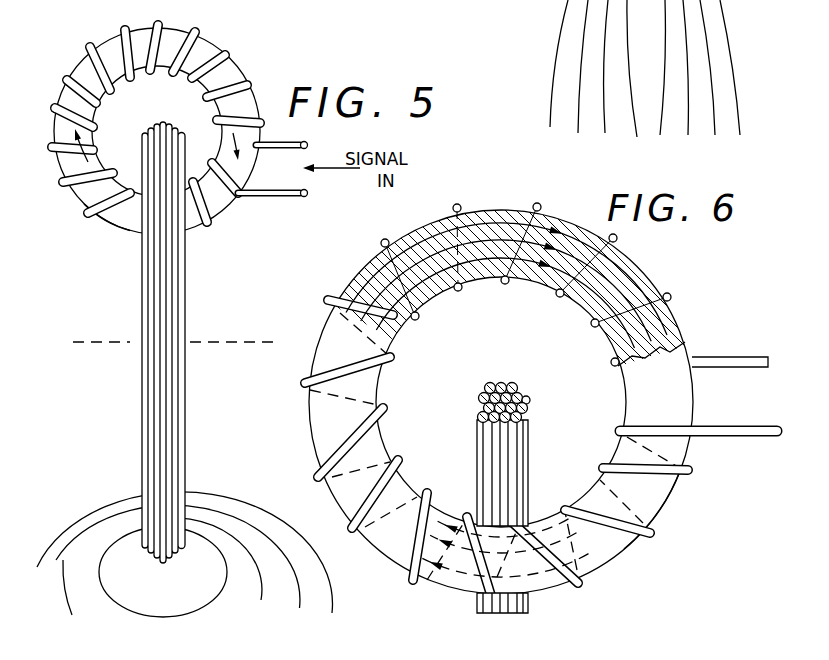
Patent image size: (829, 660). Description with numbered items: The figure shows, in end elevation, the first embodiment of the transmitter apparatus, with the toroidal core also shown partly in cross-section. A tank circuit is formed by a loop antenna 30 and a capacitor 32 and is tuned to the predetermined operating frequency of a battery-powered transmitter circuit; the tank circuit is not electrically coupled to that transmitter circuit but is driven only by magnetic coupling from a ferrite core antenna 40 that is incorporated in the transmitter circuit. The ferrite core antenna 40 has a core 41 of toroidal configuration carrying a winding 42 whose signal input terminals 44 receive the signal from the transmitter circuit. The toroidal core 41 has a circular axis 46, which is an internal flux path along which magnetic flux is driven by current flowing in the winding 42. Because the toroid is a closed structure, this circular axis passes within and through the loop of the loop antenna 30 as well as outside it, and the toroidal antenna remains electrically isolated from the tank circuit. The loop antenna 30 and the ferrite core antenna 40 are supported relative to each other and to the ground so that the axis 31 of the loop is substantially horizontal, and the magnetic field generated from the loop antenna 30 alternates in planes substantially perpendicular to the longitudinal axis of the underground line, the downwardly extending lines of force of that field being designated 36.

In FIG. 5, the loop antenna 30 is at (128, 415).
In FIG. 6, the loop antenna 30 is at (538, 449).
In FIG. 5, the axis of the loop 31 is at (117, 343).
In FIG. 5, the capacitor 32 is at (59, 13).
In FIG. 5, the downwardly extending lines of force 36 is at (224, 528).
In FIG. 6, the downwardly extending lines of force 36 is at (605, 45).
In FIG. 5, the ferrite core antenna 40 is at (226, 215).
In FIG. 6, the ferrite core antenna 40 is at (670, 260).
In FIG. 5, the core 41 is at (115, 212).
In FIG. 6, the core 41 is at (655, 502).
In FIG. 5, the winding 42 is at (133, 231).
In FIG. 6, the winding 42 is at (368, 431).
In FIG. 5, the signal input terminals 44 is at (292, 149).
In FIG. 6, the signal input terminals 44 is at (737, 360).
In FIG. 5, the circular axis 46 is at (98, 193).
In FIG. 6, the circular axis 46 is at (499, 240).